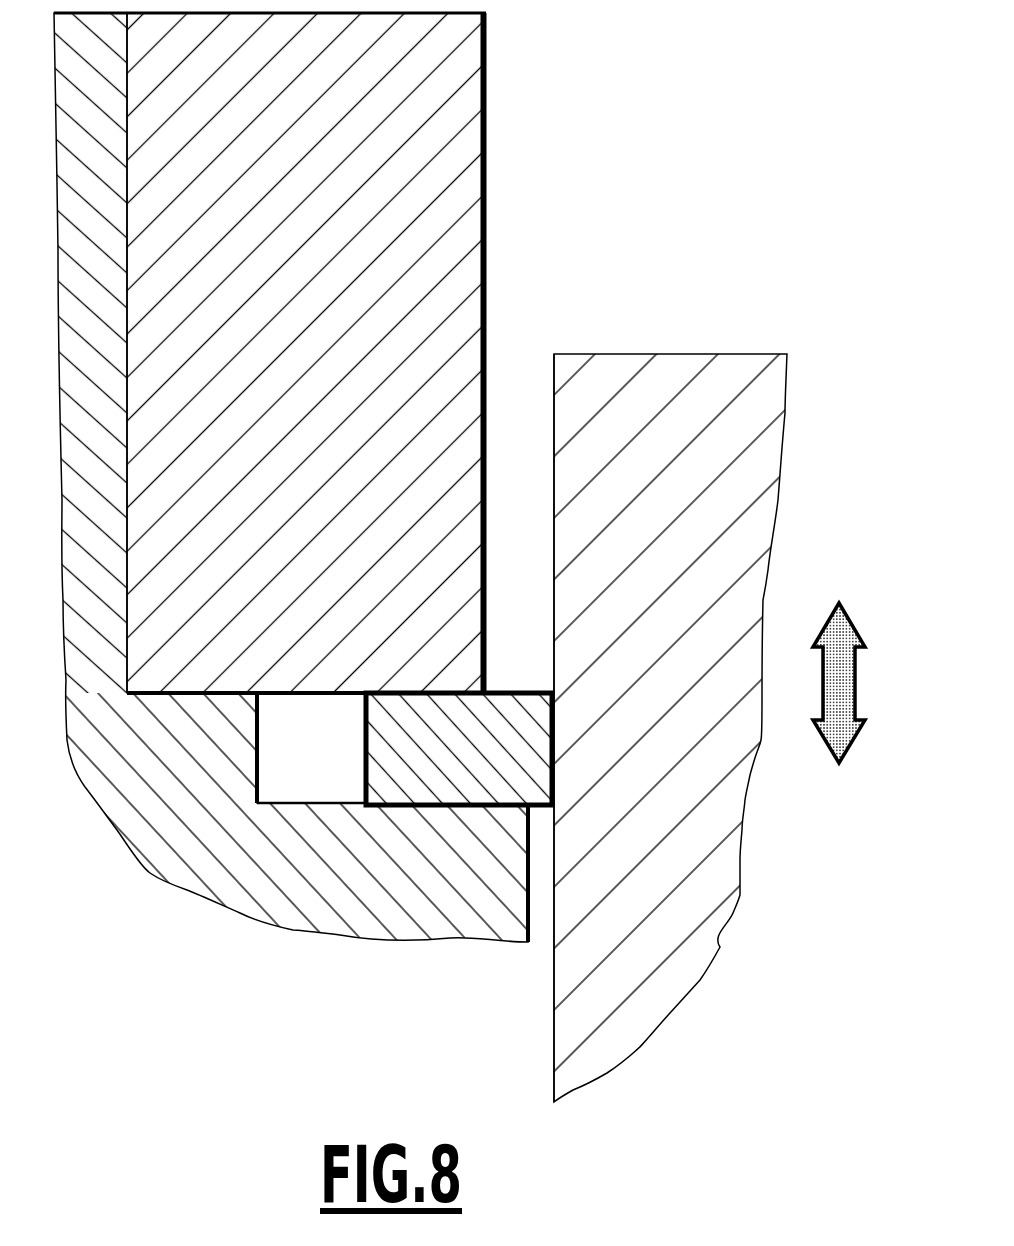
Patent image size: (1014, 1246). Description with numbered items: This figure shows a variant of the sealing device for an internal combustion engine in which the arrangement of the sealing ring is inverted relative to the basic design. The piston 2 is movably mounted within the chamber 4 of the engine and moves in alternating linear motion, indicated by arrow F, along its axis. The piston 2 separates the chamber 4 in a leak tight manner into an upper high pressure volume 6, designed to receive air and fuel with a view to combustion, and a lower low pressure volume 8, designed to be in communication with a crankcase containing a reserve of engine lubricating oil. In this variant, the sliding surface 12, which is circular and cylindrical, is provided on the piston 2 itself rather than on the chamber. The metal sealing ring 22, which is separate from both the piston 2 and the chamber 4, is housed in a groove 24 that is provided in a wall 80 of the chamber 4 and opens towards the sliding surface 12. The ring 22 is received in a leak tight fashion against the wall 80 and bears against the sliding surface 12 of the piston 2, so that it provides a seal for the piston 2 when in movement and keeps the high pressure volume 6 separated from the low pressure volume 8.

The piston 2 is at (814, 481).
The chamber 4 is at (514, 324).
The upper high pressure volume 6 is at (727, 248).
The lower low pressure volume 8 is at (724, 1058).
The sliding surface 12 is at (553, 430).
The sealing ring 22 is at (520, 760).
The groove 24 is at (322, 745).
The wall 80 is at (486, 135).
The arrow F is at (845, 683).